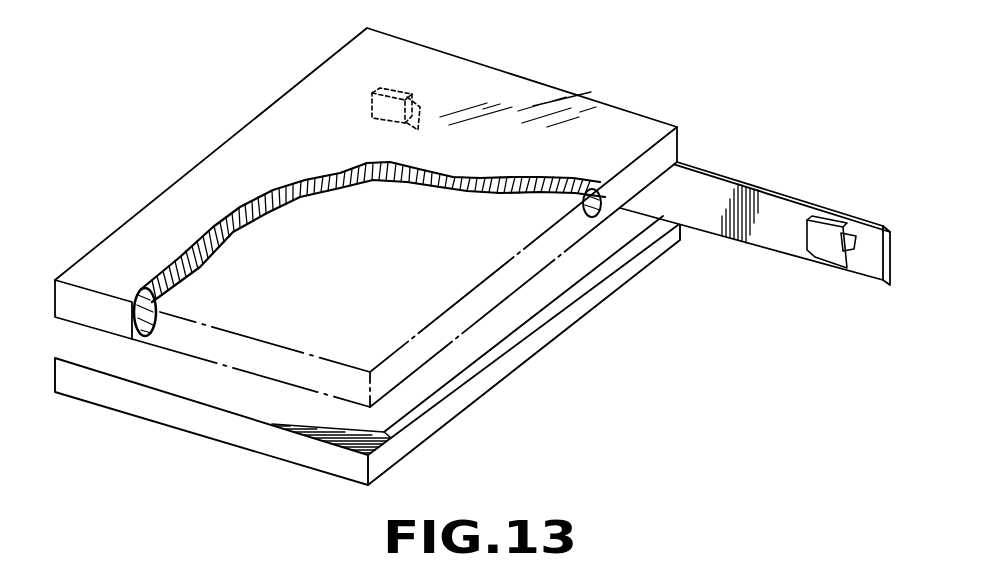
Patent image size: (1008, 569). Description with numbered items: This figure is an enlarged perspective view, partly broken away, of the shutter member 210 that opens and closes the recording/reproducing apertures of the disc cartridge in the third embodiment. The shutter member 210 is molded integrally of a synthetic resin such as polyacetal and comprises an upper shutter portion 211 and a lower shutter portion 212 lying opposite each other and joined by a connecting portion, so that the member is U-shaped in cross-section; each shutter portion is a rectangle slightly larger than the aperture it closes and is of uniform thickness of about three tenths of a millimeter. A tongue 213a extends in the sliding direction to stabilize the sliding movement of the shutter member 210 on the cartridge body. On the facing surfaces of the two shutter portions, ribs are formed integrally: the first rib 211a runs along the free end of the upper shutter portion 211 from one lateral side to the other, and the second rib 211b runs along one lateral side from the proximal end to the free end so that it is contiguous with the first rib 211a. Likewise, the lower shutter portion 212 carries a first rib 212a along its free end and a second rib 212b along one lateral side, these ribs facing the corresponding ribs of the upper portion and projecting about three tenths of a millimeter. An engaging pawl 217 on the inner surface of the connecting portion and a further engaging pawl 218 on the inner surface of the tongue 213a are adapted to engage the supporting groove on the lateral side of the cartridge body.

The shutter member 210 is at (690, 100).
The upper shutter portion 211 is at (523, 97).
The first rib of the upper shutter portion 211a is at (147, 320).
The second rib of the upper shutter portion 211b is at (594, 190).
The lower shutter portion 212 is at (405, 392).
The first rib of the lower shutter portion 212a is at (263, 408).
The second rib of the lower shutter portion 212b is at (517, 325).
The terminal strip 213a is at (773, 193).
The engaging pawl 217 is at (828, 247).
The engaging pawl 218 is at (371, 99).